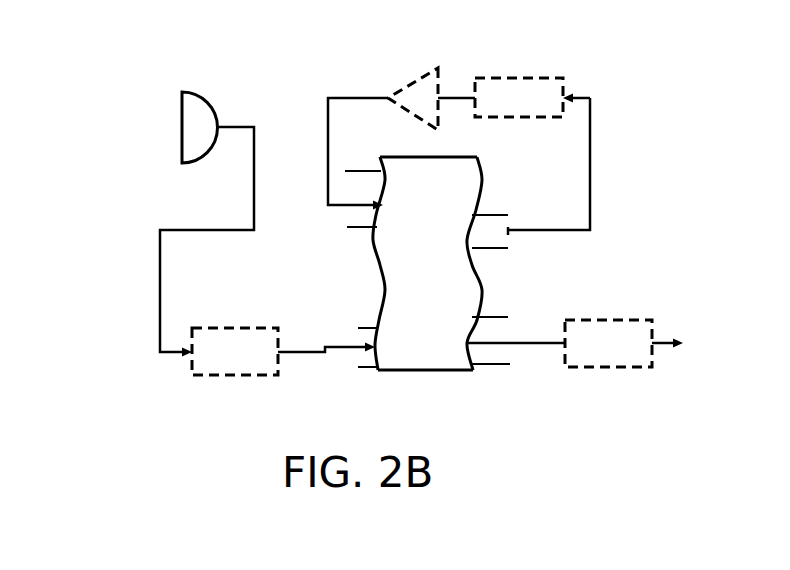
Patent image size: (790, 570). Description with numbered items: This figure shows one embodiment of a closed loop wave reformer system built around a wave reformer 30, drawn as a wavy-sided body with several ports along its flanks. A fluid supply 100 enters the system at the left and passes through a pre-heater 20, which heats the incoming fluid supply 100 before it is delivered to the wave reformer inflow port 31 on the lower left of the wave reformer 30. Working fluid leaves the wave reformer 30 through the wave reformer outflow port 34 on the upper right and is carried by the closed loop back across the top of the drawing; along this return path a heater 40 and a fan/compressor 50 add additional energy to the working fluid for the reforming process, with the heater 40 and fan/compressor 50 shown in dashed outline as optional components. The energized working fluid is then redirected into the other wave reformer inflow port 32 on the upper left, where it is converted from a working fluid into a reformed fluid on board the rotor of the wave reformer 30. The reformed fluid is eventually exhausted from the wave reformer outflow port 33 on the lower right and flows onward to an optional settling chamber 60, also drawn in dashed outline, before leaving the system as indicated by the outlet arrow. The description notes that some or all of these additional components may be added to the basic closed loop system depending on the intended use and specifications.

The fluid supply 100 is at (180, 127).
The pre-heater 20 is at (232, 328).
The wave reformer 30 is at (448, 372).
The wave reformer inflow port 31 is at (370, 368).
The wave reformer inflow port 32 is at (352, 230).
The wave reformer outflow port 33 is at (490, 316).
The wave reformer outflow port 34 is at (493, 210).
The heater 40 is at (520, 78).
The fan/compressor 50 is at (400, 82).
The settling chamber 60 is at (632, 320).